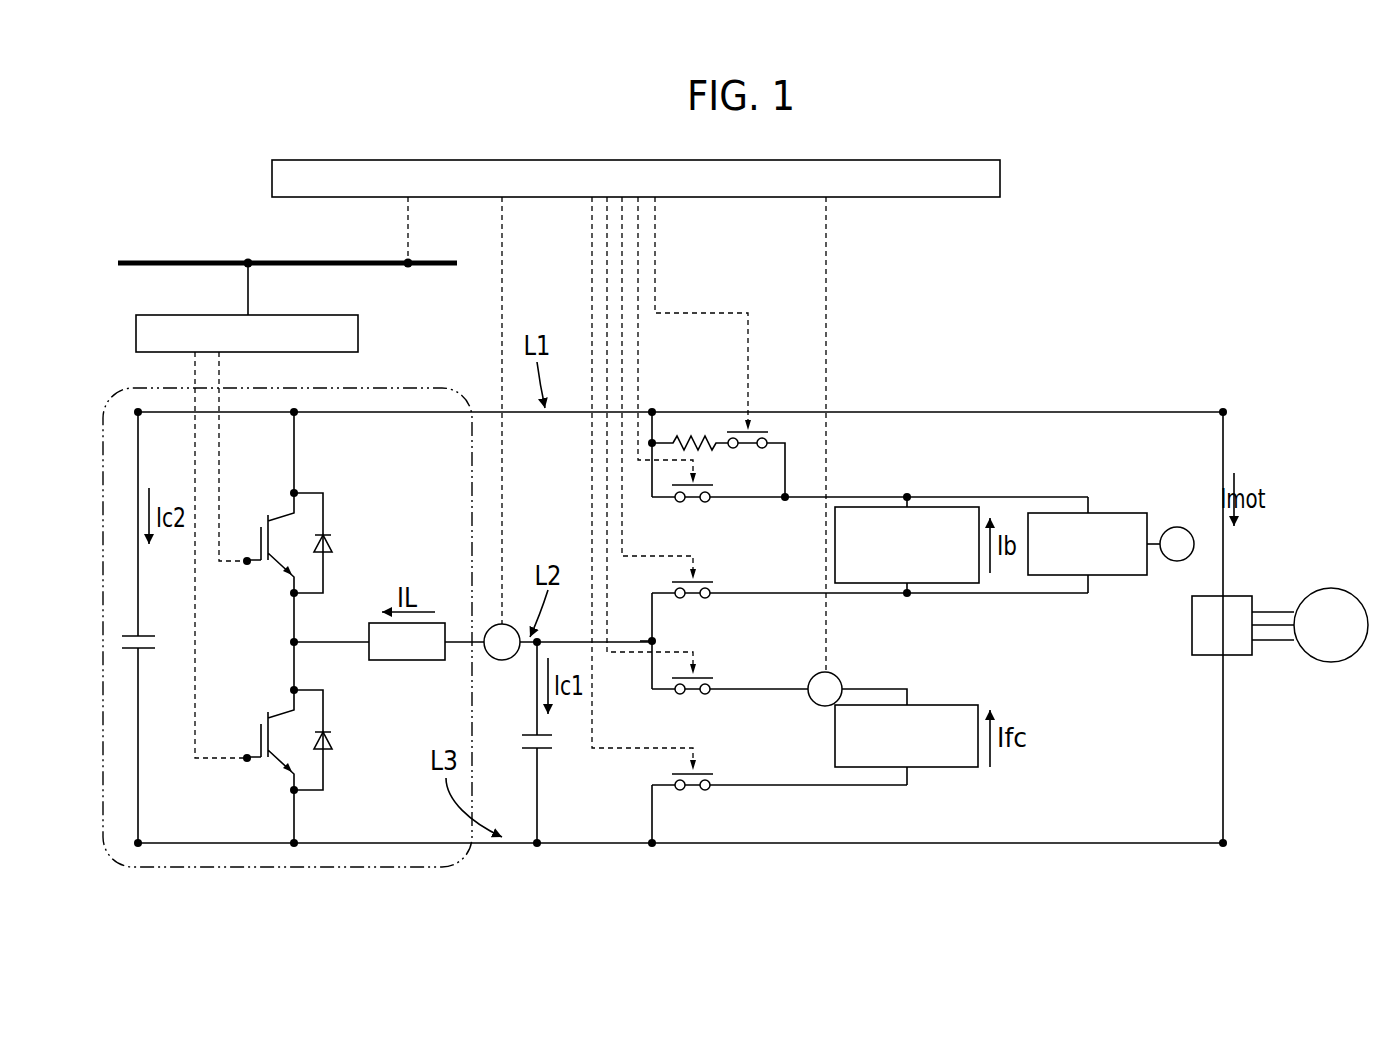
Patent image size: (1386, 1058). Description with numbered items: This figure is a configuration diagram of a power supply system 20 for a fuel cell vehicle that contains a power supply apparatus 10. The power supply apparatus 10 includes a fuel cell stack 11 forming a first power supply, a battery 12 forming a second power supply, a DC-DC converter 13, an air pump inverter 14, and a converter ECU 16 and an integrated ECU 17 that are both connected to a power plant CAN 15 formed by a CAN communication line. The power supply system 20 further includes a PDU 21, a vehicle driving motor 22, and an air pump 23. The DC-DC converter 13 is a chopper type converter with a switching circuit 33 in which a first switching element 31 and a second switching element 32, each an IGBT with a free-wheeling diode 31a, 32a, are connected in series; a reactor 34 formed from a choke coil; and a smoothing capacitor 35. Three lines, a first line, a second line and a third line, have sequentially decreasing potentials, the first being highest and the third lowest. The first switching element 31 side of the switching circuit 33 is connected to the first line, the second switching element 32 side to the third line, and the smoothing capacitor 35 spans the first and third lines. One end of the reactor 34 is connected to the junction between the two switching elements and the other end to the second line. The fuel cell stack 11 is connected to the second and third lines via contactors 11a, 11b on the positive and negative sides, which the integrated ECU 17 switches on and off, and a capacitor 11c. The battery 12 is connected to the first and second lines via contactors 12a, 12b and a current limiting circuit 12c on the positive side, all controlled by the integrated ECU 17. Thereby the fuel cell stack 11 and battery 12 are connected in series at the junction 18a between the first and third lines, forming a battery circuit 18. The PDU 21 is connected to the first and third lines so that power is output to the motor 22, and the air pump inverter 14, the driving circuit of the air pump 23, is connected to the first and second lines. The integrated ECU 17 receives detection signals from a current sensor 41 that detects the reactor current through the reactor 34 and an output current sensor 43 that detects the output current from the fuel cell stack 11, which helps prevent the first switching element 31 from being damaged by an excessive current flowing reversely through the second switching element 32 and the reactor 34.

The power supply apparatus 10 is at (1043, 305).
The power supply system 20 is at (1181, 231).
The integrated ECU 17 is at (1000, 178).
The power plant CAN 15 is at (147, 261).
The converter ECU 16 is at (300, 313).
The DC-DC converter 13 is at (411, 388).
The smoothing capacitor 35 is at (150, 635).
The first switching element 31 is at (315, 485).
The free-wheeling diode 31a is at (336, 536).
The second switching element 32 is at (317, 683).
The free-wheeling diode 32a is at (336, 732).
The switching circuit 33 is at (316, 619).
The reactor 34 is at (445, 620).
The current sensor 41 is at (499, 660).
The capacitor 11c is at (550, 752).
The junction 18a is at (647, 648).
The battery circuit 18 is at (911, 449).
The current limiting circuit 12c is at (708, 426).
The contactor 12a is at (707, 482).
The contactor 12b is at (708, 578).
The contactor 11a is at (708, 675).
The contactor 11b is at (708, 771).
The battery 12 is at (946, 506).
The air pump inverter 14 is at (1121, 512).
The air pump 23 is at (1178, 527).
The output current sensor 43 is at (840, 674).
The fuel cell stack 11 is at (938, 705).
The PDU 21 is at (1238, 597).
The vehicle driving motor 22 is at (1329, 590).